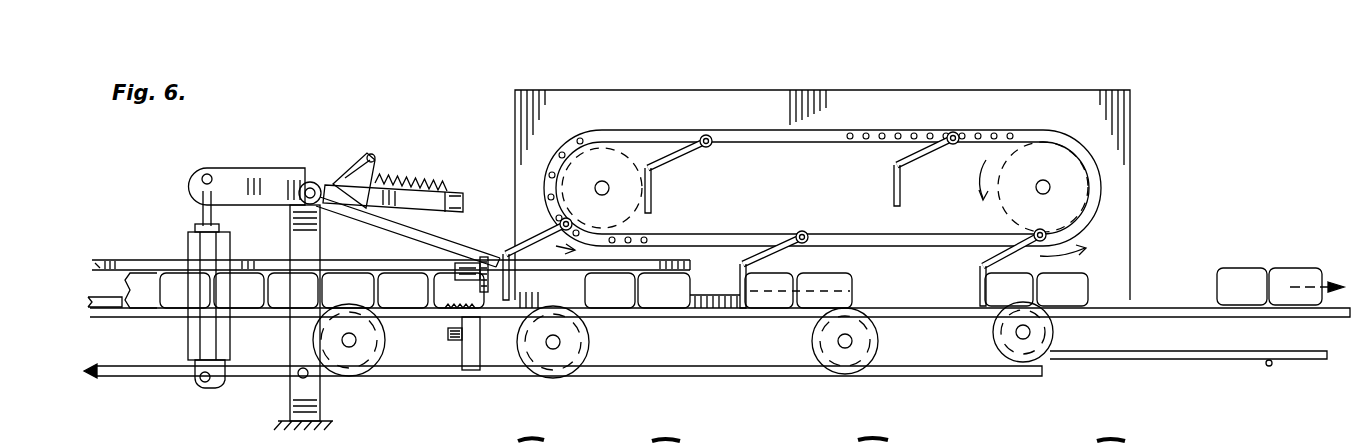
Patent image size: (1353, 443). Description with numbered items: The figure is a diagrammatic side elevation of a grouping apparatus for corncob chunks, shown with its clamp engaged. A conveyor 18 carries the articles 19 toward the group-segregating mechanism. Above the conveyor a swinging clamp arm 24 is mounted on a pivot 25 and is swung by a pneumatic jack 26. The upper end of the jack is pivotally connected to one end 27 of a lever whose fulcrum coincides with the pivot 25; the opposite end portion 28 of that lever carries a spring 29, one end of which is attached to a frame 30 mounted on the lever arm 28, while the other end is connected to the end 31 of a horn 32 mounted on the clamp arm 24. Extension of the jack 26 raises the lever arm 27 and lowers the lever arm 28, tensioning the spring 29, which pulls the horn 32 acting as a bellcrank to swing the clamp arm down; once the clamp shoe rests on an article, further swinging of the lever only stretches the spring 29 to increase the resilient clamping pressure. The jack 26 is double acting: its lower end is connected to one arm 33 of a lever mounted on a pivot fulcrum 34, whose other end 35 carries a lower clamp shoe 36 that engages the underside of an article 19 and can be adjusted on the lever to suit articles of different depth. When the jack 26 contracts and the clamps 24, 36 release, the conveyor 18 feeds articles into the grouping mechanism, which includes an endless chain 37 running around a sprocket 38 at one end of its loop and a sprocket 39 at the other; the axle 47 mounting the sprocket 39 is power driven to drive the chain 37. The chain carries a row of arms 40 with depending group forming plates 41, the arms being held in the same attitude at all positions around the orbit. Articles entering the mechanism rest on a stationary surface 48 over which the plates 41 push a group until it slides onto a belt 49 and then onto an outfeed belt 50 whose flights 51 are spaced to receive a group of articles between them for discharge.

The conveyor 18 is at (162, 318).
The article 19 is at (220, 285).
The swinging clamp arm 24 is at (378, 236).
The pivot 25 is at (300, 186).
The pneumatic jack 26 is at (228, 340).
The lever end 27 is at (228, 172).
The lever end portion 28 is at (385, 172).
The spring 29 is at (420, 178).
The frame 30 is at (448, 216).
The horn end 31 is at (368, 155).
The horn 32 is at (322, 186).
The lever arm 33 is at (222, 388).
The pivot fulcrum 34 is at (305, 380).
The lever end 35 is at (462, 366).
The lower clamp shoe 36 is at (455, 318).
The endless chain 37 is at (548, 170).
The sprocket 38 is at (620, 150).
The sprocket 39 is at (1035, 142).
The arms 40 is at (698, 160).
The group forming plates 41 is at (655, 195).
The axle 47 is at (1050, 188).
The stationary surface 48 is at (730, 316).
The belt 49 is at (895, 375).
The outfeed belt 50 is at (1148, 305).
The flights 51 is at (1210, 302).